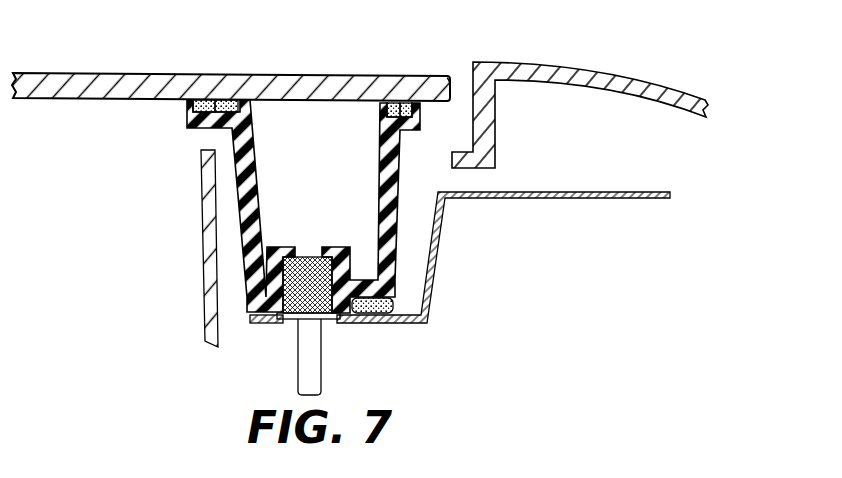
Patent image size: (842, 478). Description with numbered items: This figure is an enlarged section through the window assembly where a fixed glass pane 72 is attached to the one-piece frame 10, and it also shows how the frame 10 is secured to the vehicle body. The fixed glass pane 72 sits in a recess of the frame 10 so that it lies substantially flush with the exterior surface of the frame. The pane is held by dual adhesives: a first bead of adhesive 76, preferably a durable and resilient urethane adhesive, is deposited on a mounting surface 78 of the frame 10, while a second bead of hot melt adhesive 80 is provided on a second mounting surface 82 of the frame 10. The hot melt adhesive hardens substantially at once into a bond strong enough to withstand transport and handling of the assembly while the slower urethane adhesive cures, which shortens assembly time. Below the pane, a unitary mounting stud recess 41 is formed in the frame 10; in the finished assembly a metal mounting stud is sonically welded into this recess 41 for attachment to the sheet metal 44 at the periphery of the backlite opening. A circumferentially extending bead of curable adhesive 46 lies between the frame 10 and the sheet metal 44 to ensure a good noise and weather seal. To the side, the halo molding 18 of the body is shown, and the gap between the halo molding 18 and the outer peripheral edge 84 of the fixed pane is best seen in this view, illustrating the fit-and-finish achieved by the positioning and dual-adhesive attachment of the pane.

The fixed glass pane 72 is at (135, 82).
The first bead of adhesive 76 is at (200, 100).
The mounting surface 78 is at (243, 100).
The second bead of hot melt adhesive 80 is at (400, 105).
The second mounting surface 82 is at (408, 105).
The outer peripheral edge 84 is at (445, 87).
The frame 10 is at (255, 160).
The unitary mounting stud recess 41 is at (308, 257).
The sheet metal 44 is at (437, 218).
The bead of curable adhesive 46 is at (372, 315).
The halo molding 18 is at (575, 70).